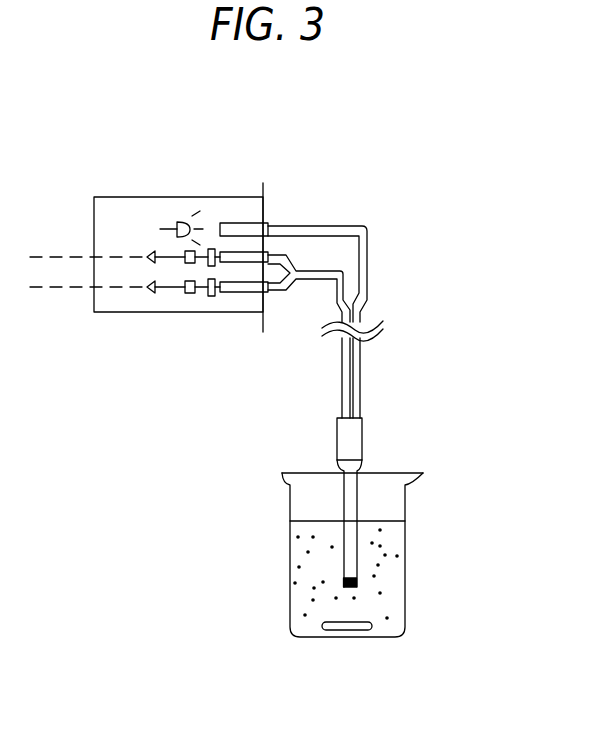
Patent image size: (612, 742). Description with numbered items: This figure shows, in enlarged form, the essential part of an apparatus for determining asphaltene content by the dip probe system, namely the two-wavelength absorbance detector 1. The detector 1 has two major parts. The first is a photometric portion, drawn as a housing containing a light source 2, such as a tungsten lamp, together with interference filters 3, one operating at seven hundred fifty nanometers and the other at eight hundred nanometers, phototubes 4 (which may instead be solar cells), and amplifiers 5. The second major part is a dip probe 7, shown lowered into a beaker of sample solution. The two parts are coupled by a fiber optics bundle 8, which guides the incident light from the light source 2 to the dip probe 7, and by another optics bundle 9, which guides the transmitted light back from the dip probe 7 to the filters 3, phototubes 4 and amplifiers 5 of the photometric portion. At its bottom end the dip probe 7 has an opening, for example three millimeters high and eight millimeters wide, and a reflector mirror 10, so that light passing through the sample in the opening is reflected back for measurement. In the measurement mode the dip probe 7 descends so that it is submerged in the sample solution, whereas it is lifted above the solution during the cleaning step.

The two-wavelength absorbance detector 1 is at (134, 203).
The light source 2 is at (185, 203).
The interference filters 3 is at (211, 312).
The phototubes 4 is at (190, 312).
The amplifiers 5 is at (148, 312).
The dip probe 7 is at (355, 464).
The fiber optics bundle 8 is at (378, 228).
The optics bundle 9 is at (318, 291).
The reflector mirror 10 is at (357, 583).